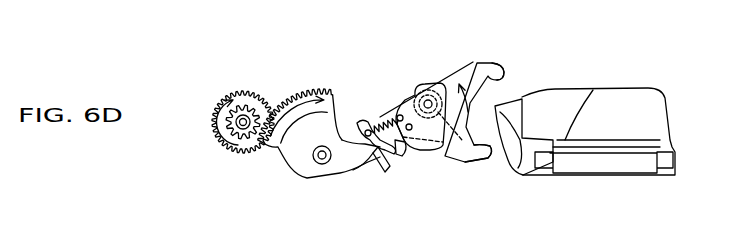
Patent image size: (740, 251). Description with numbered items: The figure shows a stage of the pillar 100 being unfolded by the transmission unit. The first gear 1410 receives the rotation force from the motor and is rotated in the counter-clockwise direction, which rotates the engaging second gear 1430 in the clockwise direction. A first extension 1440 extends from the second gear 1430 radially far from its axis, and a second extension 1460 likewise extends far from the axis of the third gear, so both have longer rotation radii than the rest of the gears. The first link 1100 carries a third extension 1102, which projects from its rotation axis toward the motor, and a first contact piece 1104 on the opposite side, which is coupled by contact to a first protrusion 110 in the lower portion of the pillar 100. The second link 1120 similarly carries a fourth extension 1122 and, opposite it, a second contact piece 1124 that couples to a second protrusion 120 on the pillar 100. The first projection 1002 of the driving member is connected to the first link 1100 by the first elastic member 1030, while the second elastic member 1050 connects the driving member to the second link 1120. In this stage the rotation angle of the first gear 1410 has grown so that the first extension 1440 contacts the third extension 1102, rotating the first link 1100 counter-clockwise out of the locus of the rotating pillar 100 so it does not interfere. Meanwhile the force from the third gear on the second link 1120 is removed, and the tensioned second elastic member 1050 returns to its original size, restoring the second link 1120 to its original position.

The pillar 100 is at (622, 102).
The first protrusion 110 is at (515, 168).
The second protrusion 120 is at (522, 97).
The first projection 1002 is at (357, 122).
The first elastic member 1030 is at (408, 148).
The second elastic member 1050 is at (395, 110).
The first link 1100 is at (447, 90).
The third extension 1102 is at (400, 152).
The first contact piece 1104 is at (497, 65).
The second link 1120 is at (470, 72).
The fourth extension 1122 is at (378, 112).
The second contact piece 1124 is at (488, 166).
The first gear 1410 is at (217, 107).
The second gear 1430 is at (307, 167).
The first extension 1440 is at (367, 160).
The second extension 1460 is at (377, 165).